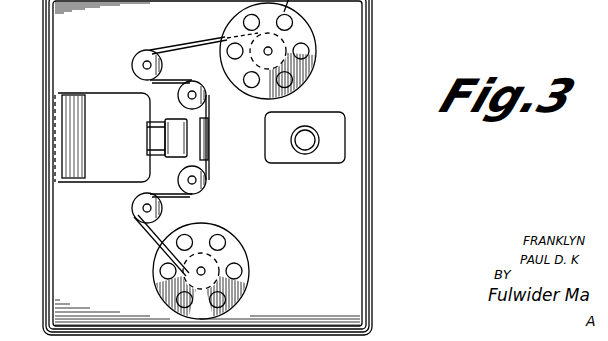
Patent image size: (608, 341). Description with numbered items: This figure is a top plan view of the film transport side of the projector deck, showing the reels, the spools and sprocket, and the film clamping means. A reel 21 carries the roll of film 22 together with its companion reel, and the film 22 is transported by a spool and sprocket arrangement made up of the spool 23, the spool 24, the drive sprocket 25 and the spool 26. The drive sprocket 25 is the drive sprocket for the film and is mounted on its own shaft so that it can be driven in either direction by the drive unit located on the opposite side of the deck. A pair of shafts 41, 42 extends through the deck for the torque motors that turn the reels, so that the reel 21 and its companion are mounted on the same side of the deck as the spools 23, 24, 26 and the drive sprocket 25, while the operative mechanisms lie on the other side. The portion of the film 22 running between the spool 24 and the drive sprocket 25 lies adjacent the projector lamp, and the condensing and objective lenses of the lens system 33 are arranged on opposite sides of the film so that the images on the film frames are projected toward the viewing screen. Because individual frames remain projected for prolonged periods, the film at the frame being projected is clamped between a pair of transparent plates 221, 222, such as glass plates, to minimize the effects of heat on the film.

The reel 21 is at (224, 238).
The roll of film 22 is at (207, 38).
The spool 23 is at (134, 61).
The spool 24 is at (196, 81).
The drive sprocket 25 is at (207, 181).
The spool 26 is at (135, 204).
The lens system 33 is at (207, 160).
The shaft 41 is at (270, 50).
The shaft 42 is at (205, 273).
The transparent plate 221 is at (172, 124).
The transparent plate 222 is at (212, 125).